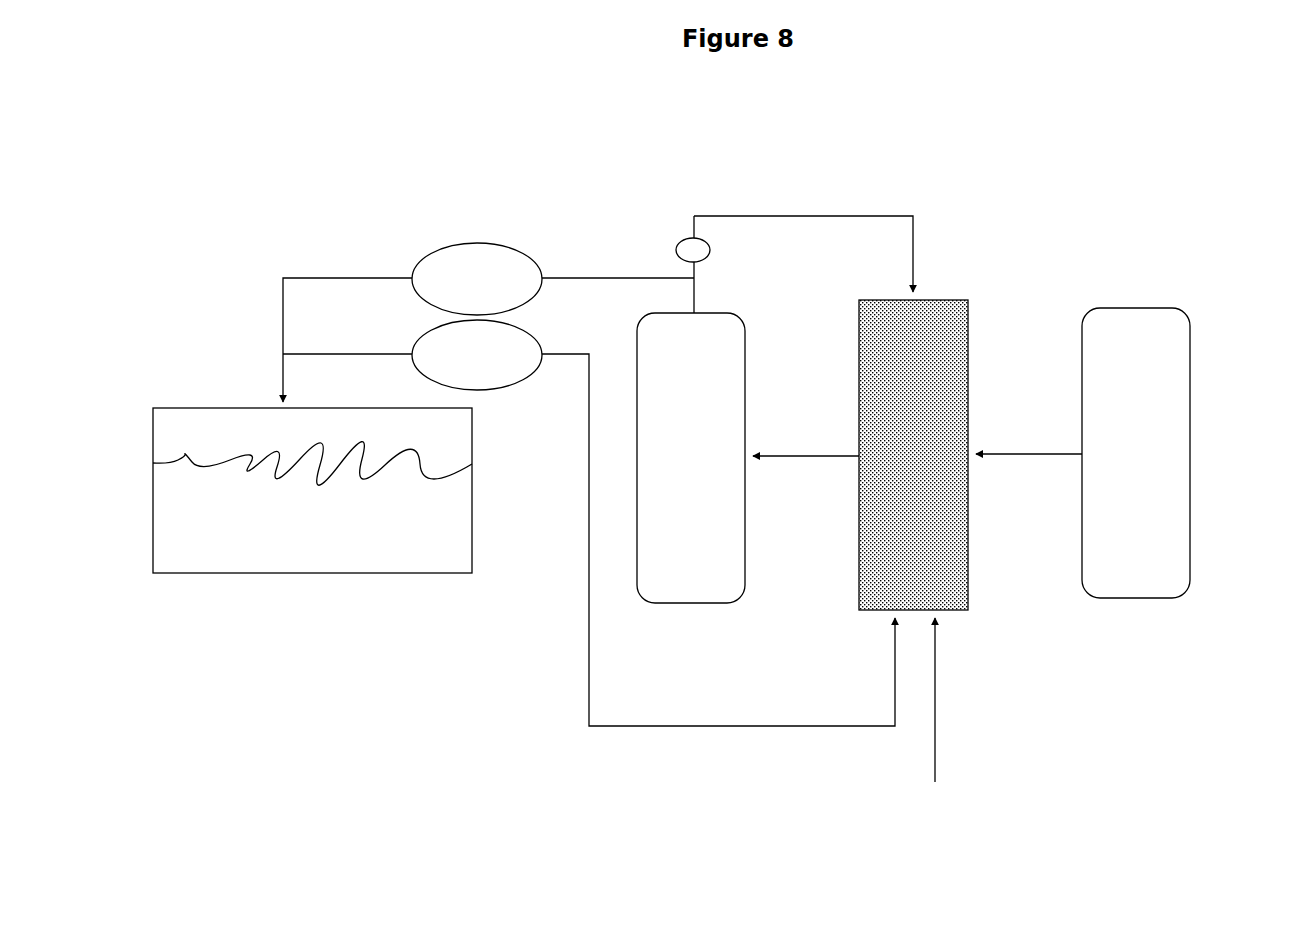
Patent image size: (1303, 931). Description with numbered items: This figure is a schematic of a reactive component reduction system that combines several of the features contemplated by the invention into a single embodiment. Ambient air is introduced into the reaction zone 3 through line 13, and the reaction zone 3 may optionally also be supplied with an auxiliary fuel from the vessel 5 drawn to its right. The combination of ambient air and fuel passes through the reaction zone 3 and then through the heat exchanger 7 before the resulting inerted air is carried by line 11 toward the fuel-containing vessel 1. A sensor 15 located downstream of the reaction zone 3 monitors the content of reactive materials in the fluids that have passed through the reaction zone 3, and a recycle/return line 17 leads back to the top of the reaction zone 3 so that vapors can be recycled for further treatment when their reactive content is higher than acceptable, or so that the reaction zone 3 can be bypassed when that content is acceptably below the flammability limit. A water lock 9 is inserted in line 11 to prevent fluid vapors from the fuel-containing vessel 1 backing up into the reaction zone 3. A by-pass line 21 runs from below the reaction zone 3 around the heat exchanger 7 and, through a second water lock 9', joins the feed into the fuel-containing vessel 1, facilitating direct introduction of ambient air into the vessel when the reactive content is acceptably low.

The fuel-containing vessel 1 is at (472, 497).
The reaction zone 3 is at (968, 548).
The vessel 5 is at (1190, 537).
The heat exchanger 7 is at (745, 545).
The water lock 9 is at (477, 238).
The water lock 9' is at (509, 344).
The line 11 is at (562, 273).
The line 13 is at (942, 706).
The sensor 15 is at (720, 252).
The recycle/return line 17 is at (808, 215).
The by-pass line 21 is at (748, 726).